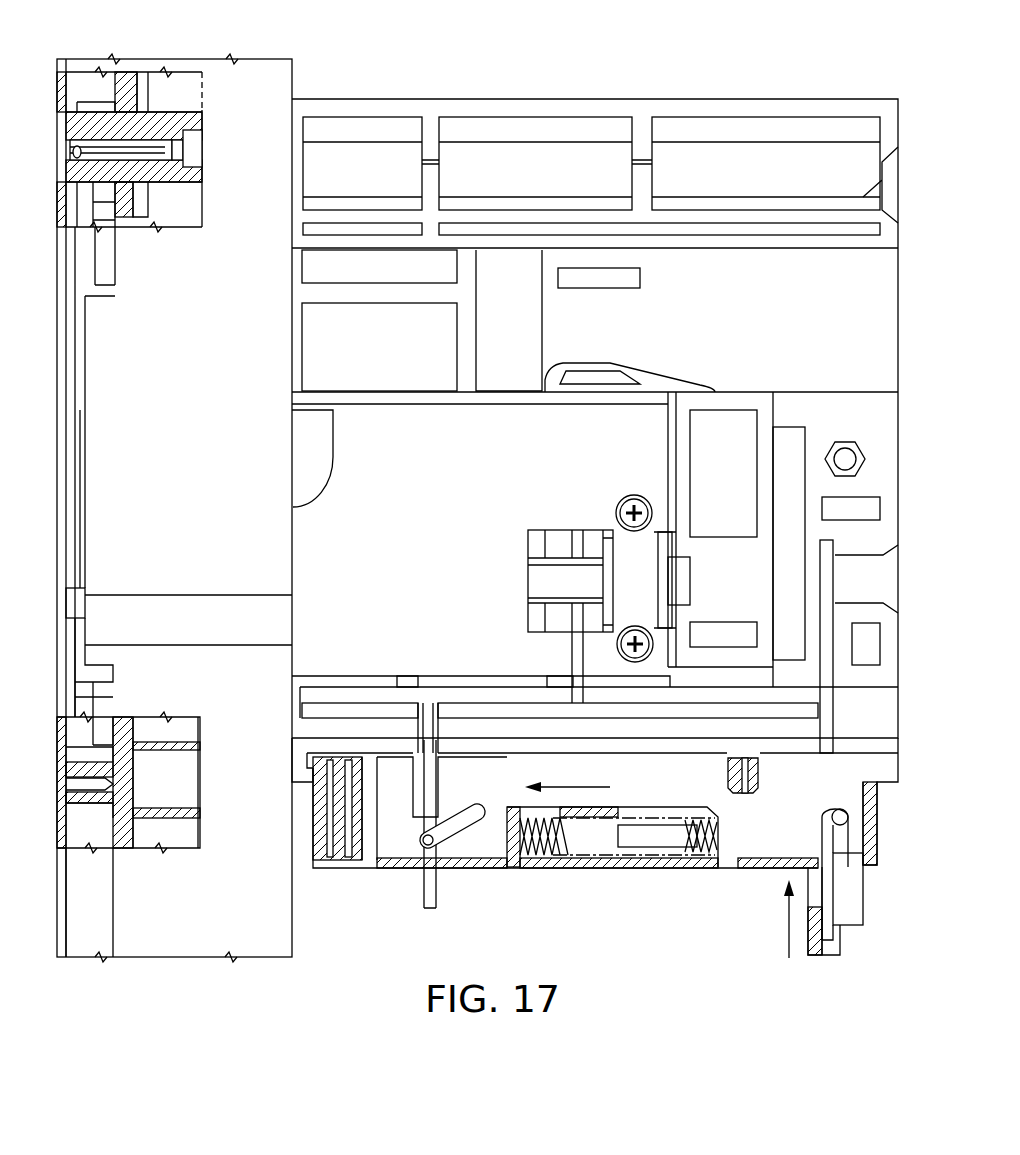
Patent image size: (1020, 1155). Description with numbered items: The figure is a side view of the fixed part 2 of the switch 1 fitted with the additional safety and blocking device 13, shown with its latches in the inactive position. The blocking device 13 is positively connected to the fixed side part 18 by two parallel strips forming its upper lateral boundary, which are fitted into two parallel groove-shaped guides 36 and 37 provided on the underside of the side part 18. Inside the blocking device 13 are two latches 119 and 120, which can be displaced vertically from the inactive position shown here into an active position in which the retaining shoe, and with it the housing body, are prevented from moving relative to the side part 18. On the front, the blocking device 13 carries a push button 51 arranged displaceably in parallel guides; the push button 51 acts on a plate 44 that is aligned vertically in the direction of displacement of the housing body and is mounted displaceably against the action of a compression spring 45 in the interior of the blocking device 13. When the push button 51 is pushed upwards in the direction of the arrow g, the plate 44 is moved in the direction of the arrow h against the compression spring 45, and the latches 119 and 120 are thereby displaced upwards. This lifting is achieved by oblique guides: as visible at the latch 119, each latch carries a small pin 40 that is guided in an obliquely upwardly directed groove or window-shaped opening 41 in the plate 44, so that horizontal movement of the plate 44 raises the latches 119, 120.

The switch 1 is at (240, 56).
The fixed part 2 is at (124, 60).
The side part 18 is at (485, 107).
The blocking device 13 is at (340, 862).
The guide 36 is at (300, 778).
The guide 37 is at (890, 770).
The pin 40 is at (433, 848).
The window-shaped opening 41 is at (470, 816).
The plate 44 is at (387, 845).
The compression spring 45 is at (545, 860).
The push button 51 is at (848, 913).
The latch 119 is at (432, 745).
The latch 120 is at (827, 745).
The arrow h is at (575, 787).
The arrow g is at (789, 946).